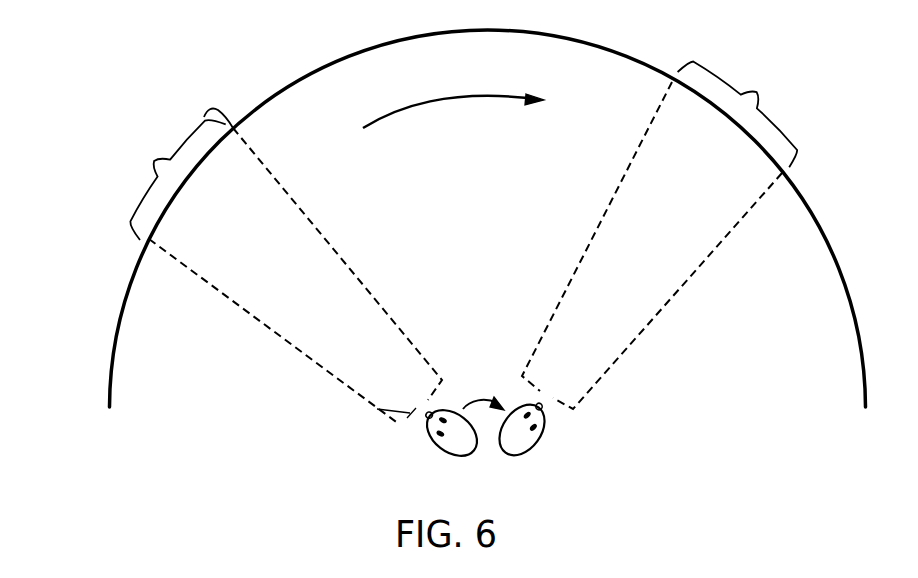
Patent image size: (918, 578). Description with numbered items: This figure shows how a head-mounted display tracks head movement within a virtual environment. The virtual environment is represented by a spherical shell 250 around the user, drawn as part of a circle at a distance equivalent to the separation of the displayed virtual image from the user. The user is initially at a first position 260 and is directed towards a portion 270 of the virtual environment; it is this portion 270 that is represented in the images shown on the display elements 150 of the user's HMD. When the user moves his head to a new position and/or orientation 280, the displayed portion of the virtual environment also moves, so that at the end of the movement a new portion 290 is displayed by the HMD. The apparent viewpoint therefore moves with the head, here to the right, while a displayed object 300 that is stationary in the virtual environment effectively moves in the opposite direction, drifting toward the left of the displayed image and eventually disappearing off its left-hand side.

The spherical shell 250 is at (110, 362).
The portion of the virtual environment 270 is at (155, 159).
The displayed object 300 is at (203, 117).
The new portion 290 is at (760, 88).
The display elements 150 is at (377, 409).
The first position 260 is at (437, 446).
The new position and/or orientation 280 is at (540, 438).